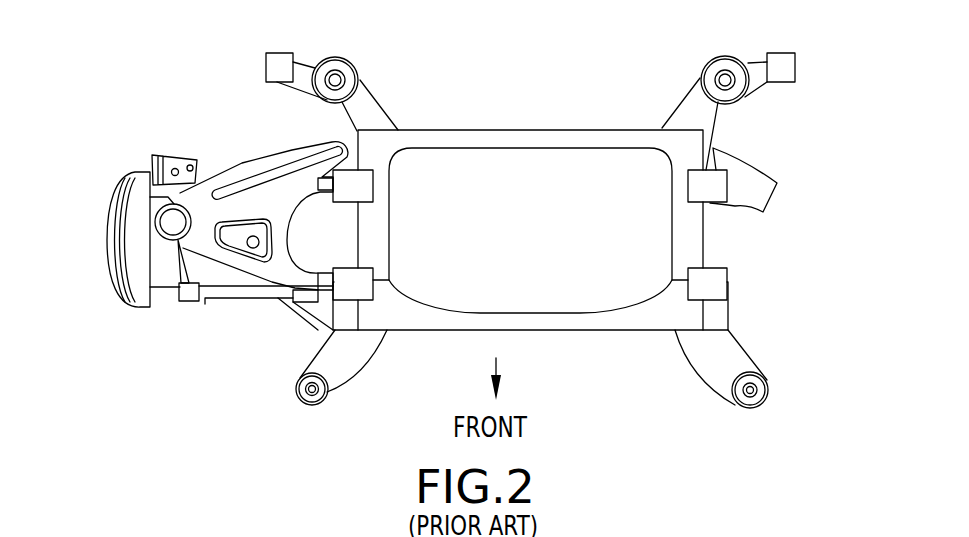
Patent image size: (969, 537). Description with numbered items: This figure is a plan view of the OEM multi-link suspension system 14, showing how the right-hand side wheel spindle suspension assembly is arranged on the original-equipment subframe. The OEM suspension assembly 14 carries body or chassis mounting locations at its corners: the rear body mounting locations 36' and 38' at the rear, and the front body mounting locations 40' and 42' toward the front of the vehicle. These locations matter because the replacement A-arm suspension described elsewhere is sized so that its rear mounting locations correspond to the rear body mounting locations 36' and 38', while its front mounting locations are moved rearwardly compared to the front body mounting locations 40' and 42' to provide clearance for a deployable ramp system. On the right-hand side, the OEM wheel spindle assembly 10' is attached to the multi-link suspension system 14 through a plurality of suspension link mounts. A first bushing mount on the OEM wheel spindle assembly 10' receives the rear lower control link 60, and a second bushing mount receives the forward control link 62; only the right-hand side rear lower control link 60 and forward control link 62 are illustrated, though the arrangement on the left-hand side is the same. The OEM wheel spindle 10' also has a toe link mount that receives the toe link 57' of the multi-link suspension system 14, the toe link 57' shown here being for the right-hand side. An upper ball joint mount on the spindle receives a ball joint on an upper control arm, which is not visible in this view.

The OEM multi-link suspension system 14 is at (436, 234).
The OEM wheel spindle assembly 10' is at (140, 199).
The rear lower control link 60 is at (267, 155).
The rear body mounting location 38' is at (343, 73).
The rear body mounting location 36' is at (715, 90).
The front body mounting location 40' is at (737, 359).
The front body mounting location 42' is at (305, 395).
The toe link 57' is at (255, 307).
The forward control link 62 is at (303, 320).